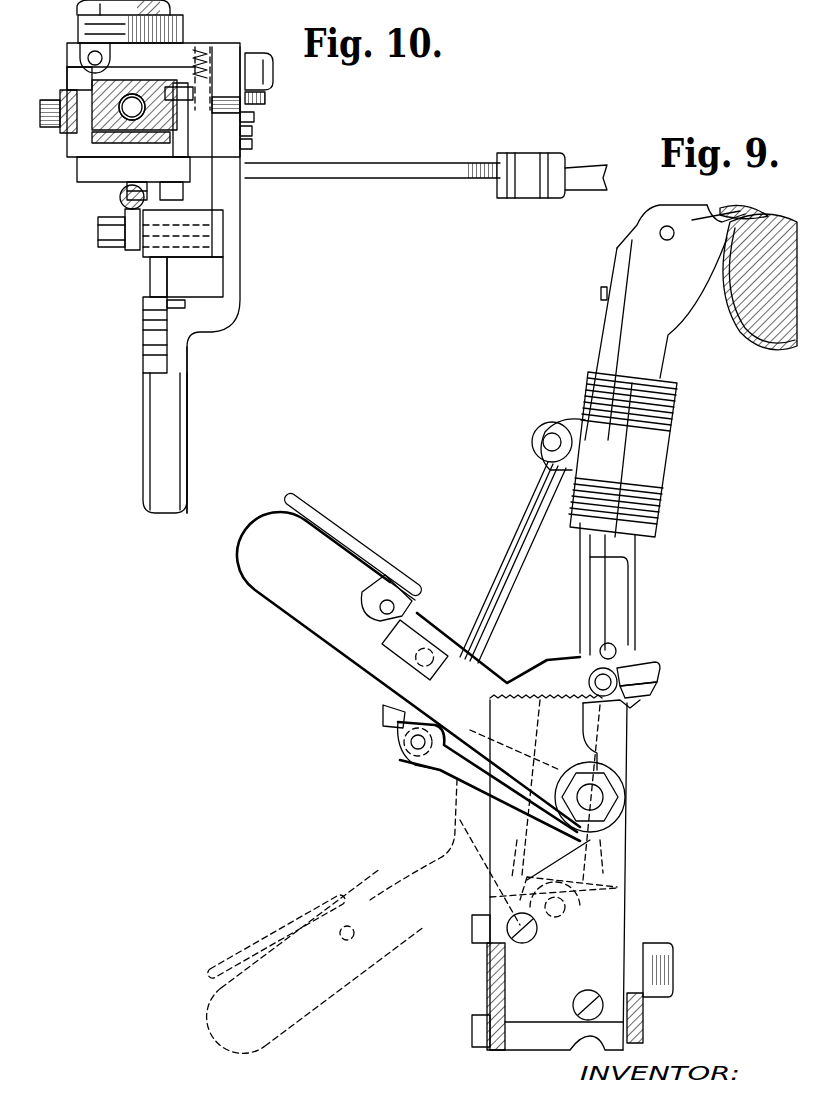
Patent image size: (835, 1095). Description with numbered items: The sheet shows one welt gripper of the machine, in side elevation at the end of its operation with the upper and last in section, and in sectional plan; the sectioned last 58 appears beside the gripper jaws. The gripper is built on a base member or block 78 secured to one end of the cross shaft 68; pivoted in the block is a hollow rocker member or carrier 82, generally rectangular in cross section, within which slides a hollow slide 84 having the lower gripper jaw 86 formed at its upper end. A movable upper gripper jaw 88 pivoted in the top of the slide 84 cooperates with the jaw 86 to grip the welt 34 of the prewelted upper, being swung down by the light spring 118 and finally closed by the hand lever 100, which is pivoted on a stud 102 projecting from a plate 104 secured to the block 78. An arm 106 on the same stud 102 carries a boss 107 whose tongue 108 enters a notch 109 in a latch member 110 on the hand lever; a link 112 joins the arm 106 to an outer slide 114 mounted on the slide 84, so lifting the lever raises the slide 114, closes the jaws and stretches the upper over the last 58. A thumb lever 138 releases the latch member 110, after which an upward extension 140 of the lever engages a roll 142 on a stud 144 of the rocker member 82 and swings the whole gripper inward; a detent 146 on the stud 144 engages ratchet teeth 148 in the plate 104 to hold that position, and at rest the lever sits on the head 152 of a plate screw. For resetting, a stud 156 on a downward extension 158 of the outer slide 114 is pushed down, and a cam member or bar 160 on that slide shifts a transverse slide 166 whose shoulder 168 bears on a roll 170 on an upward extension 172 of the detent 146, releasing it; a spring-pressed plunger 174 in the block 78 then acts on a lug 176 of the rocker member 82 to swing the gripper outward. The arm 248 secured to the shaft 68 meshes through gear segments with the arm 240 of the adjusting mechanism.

In FIG. 9, the welt 34 is at (718, 213).
In FIG. 9, the cam member 58 is at (780, 213).
In FIG. 10, the cross shaft 68 is at (90, 6).
In FIG. 9, the cross shaft 68 is at (673, 988).
In FIG. 9, the base member or block 78 is at (628, 912).
In FIG. 10, the hollow rocker member or carrier 82 is at (80, 128).
In FIG. 9, the hollow rocker member or carrier 82 is at (623, 850).
In FIG. 10, the hollow slide 84 is at (88, 140).
In FIG. 9, the hollow slide 84 is at (663, 342).
In FIG. 9, the lower gripper jaw 86 is at (682, 242).
In FIG. 9, the upper gripper jaw 88 is at (745, 208).
In FIG. 10, the hand lever 100 is at (192, 328).
In FIG. 9, the hand lever 100 is at (305, 1064).
In FIG. 10, the stud 102 is at (272, 78).
In FIG. 9, the stud 102 is at (603, 798).
In FIG. 9, the plate 104 is at (612, 750).
In FIG. 10, the arm 106 is at (233, 229).
In FIG. 9, the arm 106 is at (440, 768).
In FIG. 10, the boss 107 is at (200, 258).
In FIG. 10, the tongue 108 is at (183, 226).
In FIG. 9, the tongue 108 is at (406, 750).
In FIG. 9, the notch 109 is at (392, 722).
In FIG. 10, the latch member 110 is at (150, 280).
In FIG. 9, the latch member 110 is at (378, 703).
In FIG. 10, the link 112 is at (120, 212).
In FIG. 9, the link 112 is at (506, 540).
In FIG. 9, the outer slide 114 is at (660, 440).
In FIG. 10, the spring 118 is at (140, 95).
In FIG. 10, the thumb lever 138 is at (175, 424).
In FIG. 9, the thumb lever 138 is at (366, 543).
In FIG. 9, the upward extension 140 is at (583, 644).
In FIG. 10, the roll 142 is at (266, 97).
In FIG. 10, the stud 144 is at (252, 118).
In FIG. 9, the stud 144 is at (640, 698).
In FIG. 10, the detent 146 is at (251, 134).
In FIG. 9, the detent 146 is at (660, 683).
In FIG. 10, the ratchet teeth 148 is at (251, 146).
In FIG. 9, the ratchet teeth 148 is at (630, 710).
In FIG. 9, the head 152 is at (532, 941).
In FIG. 10, the stud 156 is at (58, 125).
In FIG. 10, the downward extension 158 is at (70, 92).
In FIG. 10, the cam member or bar 160 is at (145, 181).
In FIG. 10, the transverse slide 166 is at (175, 141).
In FIG. 9, the transverse slide 166 is at (595, 586).
In FIG. 9, the longitudinal wall or shoulder 168 is at (618, 614).
In FIG. 10, the roll 170 is at (197, 70).
In FIG. 9, the roll 170 is at (617, 676).
In FIG. 9, the upward extension 172 is at (616, 650).
In FIG. 10, the spring-pressed plunger 174 is at (88, 60).
In FIG. 9, the spring-pressed plunger 174 is at (623, 898).
In FIG. 10, the lug 176 is at (80, 50).
In FIG. 9, the lug 176 is at (625, 880).
In FIG. 10, the arm 240 is at (593, 188).
In FIG. 10, the arm 248 is at (395, 181).